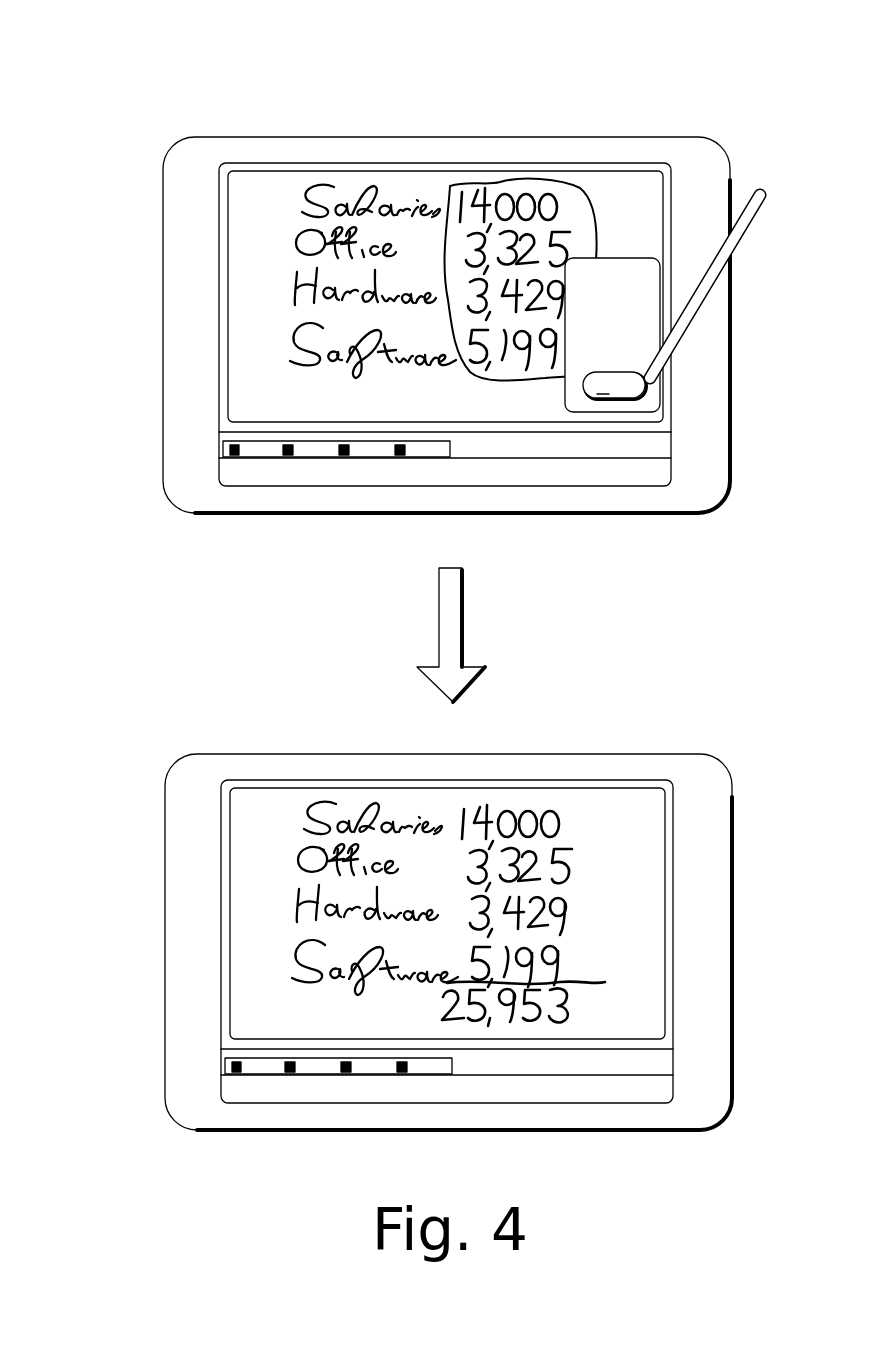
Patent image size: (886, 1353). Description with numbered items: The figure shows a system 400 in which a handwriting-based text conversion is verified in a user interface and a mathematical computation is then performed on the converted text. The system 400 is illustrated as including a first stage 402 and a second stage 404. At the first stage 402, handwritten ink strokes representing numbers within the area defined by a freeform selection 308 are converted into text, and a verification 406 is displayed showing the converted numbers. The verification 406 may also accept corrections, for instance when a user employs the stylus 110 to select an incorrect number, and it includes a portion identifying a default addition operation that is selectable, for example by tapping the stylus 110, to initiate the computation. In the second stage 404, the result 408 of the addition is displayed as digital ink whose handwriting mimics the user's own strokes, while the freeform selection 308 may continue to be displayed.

The system 400 is at (150, 70).
The first stage 402 is at (138, 250).
The second stage 404 is at (137, 882).
The stylus 110 is at (713, 280).
The second freeform selection 308 is at (458, 366).
The verification 406 is at (565, 392).
The result 408 is at (548, 1003).